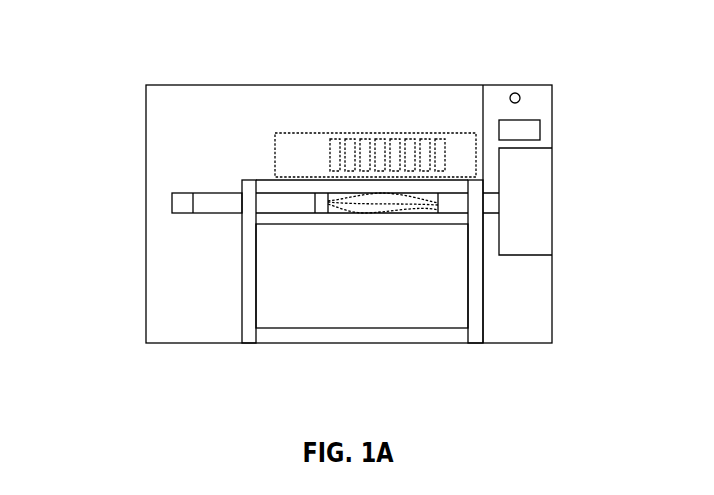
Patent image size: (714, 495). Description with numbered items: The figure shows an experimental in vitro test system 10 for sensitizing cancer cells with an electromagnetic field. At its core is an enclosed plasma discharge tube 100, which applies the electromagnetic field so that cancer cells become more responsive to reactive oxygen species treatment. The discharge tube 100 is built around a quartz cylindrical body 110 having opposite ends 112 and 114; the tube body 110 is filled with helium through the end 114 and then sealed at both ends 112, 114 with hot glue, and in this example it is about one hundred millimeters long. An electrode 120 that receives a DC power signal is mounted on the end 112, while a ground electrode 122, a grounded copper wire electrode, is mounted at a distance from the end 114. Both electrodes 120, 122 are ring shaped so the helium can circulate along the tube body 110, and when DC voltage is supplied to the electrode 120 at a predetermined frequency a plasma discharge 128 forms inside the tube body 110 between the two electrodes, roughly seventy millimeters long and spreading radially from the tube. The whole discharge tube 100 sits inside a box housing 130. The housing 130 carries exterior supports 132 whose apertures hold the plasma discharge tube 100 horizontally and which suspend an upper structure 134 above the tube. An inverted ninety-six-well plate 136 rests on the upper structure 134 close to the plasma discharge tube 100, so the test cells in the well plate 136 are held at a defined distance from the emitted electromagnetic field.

The in vitro test system 10 is at (124, 76).
The plasma discharge tube 100 is at (428, 187).
The quartz cylindrical body 110 is at (342, 198).
The end 112 is at (542, 202).
The end 114 is at (168, 205).
The electrode 120 is at (448, 204).
The ground electrode 122 is at (315, 224).
The plasma discharge 128 is at (377, 202).
The box housing 130 is at (473, 303).
The exterior supports 132 is at (247, 265).
The upper structure 134 is at (377, 187).
The inverted 96-well plate 136 is at (337, 176).